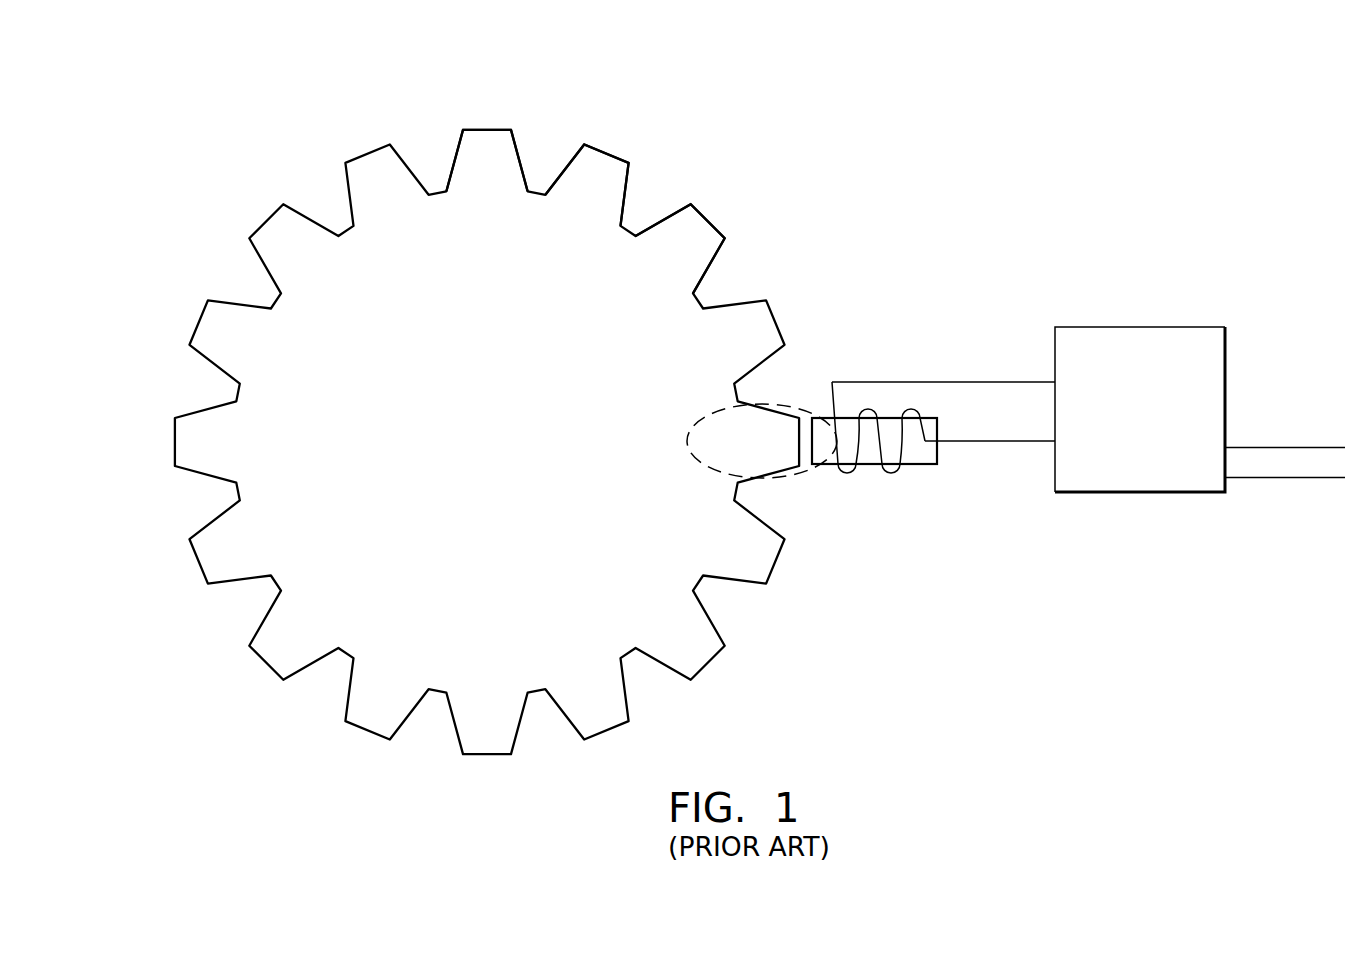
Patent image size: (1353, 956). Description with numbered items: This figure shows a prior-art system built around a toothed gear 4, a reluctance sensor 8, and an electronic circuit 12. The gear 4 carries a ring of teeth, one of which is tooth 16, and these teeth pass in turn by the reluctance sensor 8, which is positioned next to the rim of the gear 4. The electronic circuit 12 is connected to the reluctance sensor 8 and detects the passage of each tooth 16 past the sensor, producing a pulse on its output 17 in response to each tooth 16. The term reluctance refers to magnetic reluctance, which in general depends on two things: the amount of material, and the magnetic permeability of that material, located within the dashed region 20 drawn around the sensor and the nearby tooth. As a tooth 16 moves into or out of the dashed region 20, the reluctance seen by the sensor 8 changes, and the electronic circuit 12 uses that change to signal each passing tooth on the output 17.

The toothed gear 4 is at (501, 453).
The tooth 16 is at (487, 122).
The reluctance sensor 8 is at (915, 465).
The electronic circuit 12 is at (1159, 426).
The output 17 is at (1308, 500).
The dashed region 20 is at (780, 402).